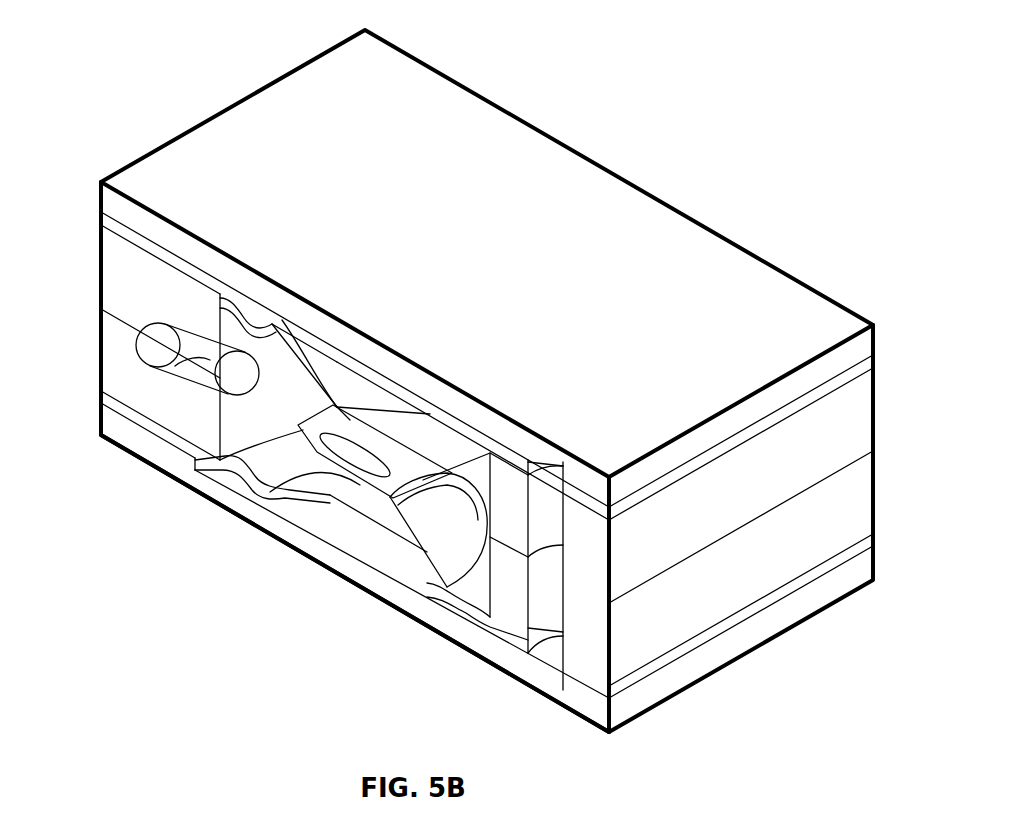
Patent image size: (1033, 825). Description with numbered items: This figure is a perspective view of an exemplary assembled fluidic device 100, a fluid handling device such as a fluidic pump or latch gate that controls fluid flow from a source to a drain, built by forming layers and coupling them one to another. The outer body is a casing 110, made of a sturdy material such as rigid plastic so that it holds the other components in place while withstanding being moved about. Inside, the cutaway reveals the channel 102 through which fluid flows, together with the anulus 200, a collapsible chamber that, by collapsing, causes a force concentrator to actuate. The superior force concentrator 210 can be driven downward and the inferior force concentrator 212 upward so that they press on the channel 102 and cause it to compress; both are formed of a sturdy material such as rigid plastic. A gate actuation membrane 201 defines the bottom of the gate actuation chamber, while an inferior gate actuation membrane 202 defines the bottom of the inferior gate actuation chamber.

The fluidic device 100 is at (745, 170).
The casing 110 is at (158, 452).
The anulus 200 is at (229, 333).
The gate actuation membrane 201 is at (430, 412).
The inferior gate actuation membrane 202 is at (428, 590).
The superior force concentrator 210 is at (343, 388).
The inferior force concentrator 212 is at (355, 522).
The channel 102 is at (305, 470).